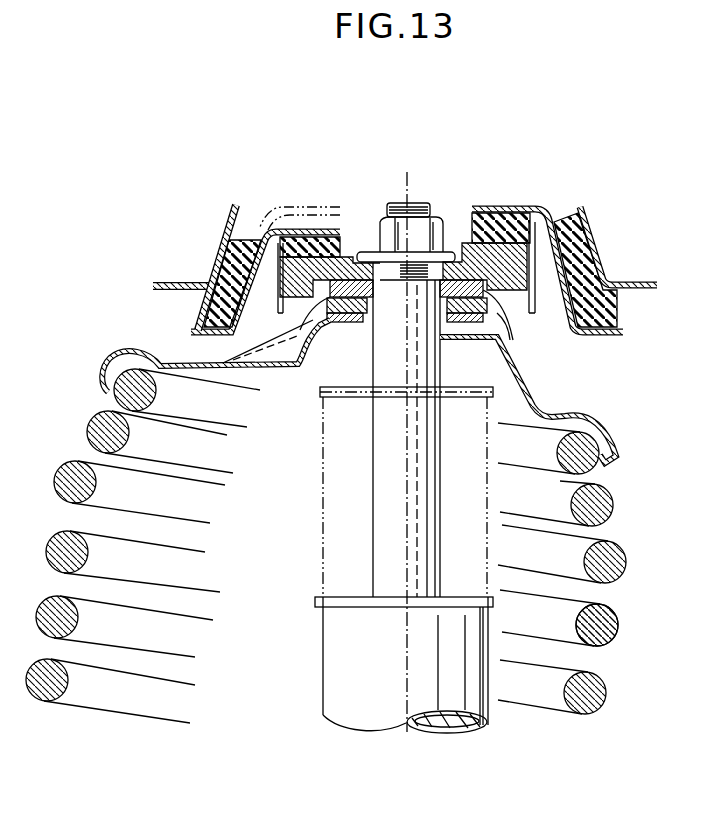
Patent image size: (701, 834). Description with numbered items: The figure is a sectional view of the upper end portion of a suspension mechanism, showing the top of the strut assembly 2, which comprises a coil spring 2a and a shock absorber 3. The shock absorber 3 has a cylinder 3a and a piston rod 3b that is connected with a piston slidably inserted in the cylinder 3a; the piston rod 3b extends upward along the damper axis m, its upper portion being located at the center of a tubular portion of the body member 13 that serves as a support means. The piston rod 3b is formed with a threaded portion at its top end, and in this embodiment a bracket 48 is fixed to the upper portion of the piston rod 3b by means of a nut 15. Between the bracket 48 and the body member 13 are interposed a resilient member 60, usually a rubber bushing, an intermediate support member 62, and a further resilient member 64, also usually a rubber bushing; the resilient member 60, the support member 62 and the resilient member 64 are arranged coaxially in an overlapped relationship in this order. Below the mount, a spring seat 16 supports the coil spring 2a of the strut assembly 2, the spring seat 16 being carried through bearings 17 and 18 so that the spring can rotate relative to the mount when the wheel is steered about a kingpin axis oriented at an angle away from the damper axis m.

The damper axis m is at (412, 182).
The strut assembly 2 is at (68, 398).
The coil spring 2a is at (617, 638).
The shock absorber 3 is at (357, 506).
The cylinder 3a is at (322, 438).
The piston rod 3b is at (390, 468).
The body member 13 is at (591, 243).
The nut 15 is at (446, 224).
The spring seat 16 is at (521, 383).
The bearing 17 is at (511, 334).
The bearing 18 is at (461, 322).
The bracket 48 is at (350, 258).
The resilient member 60 is at (512, 213).
The intermediate support member 62 is at (533, 207).
The resilient member 64 is at (565, 216).